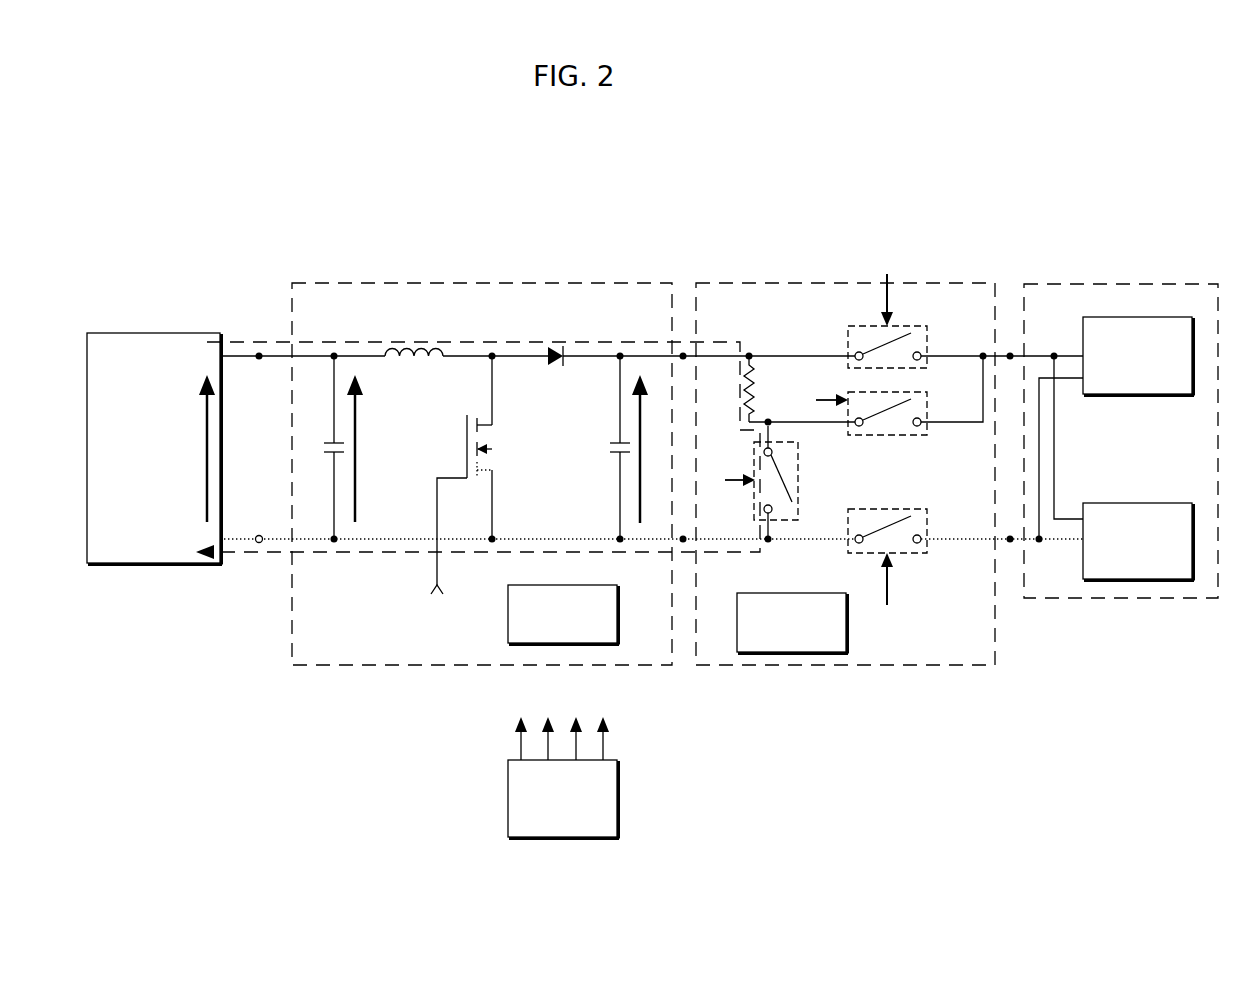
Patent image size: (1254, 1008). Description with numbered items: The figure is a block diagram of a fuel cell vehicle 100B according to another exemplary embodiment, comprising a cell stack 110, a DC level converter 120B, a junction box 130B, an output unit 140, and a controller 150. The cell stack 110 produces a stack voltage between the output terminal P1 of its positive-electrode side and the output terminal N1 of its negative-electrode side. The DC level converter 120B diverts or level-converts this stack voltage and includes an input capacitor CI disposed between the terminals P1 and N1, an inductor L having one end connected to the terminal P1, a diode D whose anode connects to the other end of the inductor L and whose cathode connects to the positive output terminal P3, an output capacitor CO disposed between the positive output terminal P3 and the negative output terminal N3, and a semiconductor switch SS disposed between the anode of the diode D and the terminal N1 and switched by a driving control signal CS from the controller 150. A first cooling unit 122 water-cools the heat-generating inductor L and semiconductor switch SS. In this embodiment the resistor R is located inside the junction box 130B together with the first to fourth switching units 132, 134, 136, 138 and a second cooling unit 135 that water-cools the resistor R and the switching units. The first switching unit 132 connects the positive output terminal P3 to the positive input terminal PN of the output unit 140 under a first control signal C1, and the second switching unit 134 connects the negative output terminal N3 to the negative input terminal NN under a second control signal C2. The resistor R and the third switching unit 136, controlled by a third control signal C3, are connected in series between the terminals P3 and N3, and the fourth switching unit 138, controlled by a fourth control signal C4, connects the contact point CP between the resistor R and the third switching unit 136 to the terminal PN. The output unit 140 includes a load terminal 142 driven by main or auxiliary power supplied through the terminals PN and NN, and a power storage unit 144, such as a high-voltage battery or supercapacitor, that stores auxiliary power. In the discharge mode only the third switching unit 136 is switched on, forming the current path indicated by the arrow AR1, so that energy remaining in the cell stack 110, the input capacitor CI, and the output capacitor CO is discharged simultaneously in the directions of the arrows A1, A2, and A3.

The fuel cell vehicle 100B is at (1035, 191).
The cell stack 110 is at (165, 333).
The DC level converter 120B is at (516, 283).
The first cooling unit 122 is at (576, 585).
The junction box 130B is at (787, 283).
The first switching unit 132 is at (911, 326).
The second switching unit 134 is at (911, 554).
The third switching unit 136 is at (791, 521).
The fourth switching unit 138 is at (911, 435).
The second cooling unit 135 is at (766, 653).
The output unit 140 is at (1100, 284).
The load terminal 142 is at (1150, 317).
The power storage unit 144 is at (1150, 503).
The controller 150 is at (576, 838).
The output terminal of positive-electrode side P1 is at (258, 370).
The output terminal of negative-electrode side N1 is at (259, 528).
The positive output terminal P3 is at (683, 350).
The negative output terminal N3 is at (683, 545).
The positive input terminal PN is at (1010, 350).
The negative input terminal NN is at (1010, 545).
The arrow A1 is at (204, 512).
The arrow A2 is at (357, 490).
The arrow A3 is at (638, 505).
The arrow AR1 is at (244, 558).
The input capacitor CI is at (322, 447).
The output capacitor CO is at (604, 447).
The inductor L is at (414, 338).
The diode D is at (555, 343).
The semiconductor switch SS is at (494, 447).
The driving control signal CS is at (446, 550).
The contact point CP is at (768, 418).
The resistor R is at (757, 389).
The first control signal C1 is at (887, 286).
The second control signal C2 is at (887, 592).
The third control signal C3 is at (728, 480).
The fourth control signal C4 is at (819, 400).